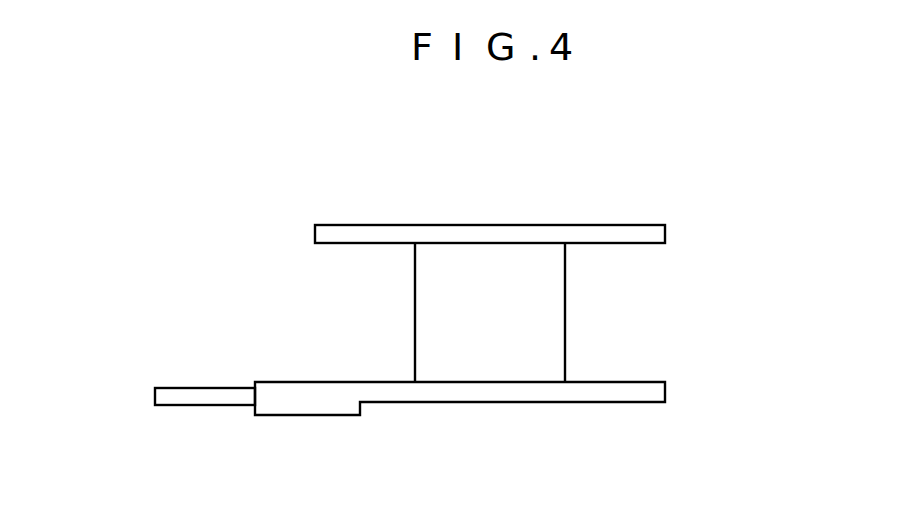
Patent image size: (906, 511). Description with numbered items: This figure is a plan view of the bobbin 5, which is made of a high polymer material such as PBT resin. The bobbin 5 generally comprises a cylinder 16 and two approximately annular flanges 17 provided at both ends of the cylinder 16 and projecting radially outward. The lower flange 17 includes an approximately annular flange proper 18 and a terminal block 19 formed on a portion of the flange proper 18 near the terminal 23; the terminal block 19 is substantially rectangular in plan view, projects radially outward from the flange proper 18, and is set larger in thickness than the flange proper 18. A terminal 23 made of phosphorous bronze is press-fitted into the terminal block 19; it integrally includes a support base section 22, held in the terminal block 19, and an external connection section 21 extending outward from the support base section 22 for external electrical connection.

The bobbin 5 is at (538, 218).
The cylinder 16 is at (566, 312).
The flange 17 is at (645, 234).
The flange proper 18 is at (537, 392).
The terminal block 19 is at (323, 412).
The external connection section 21 is at (193, 398).
The support base section 22 is at (300, 400).
The terminal 23 is at (153, 397).